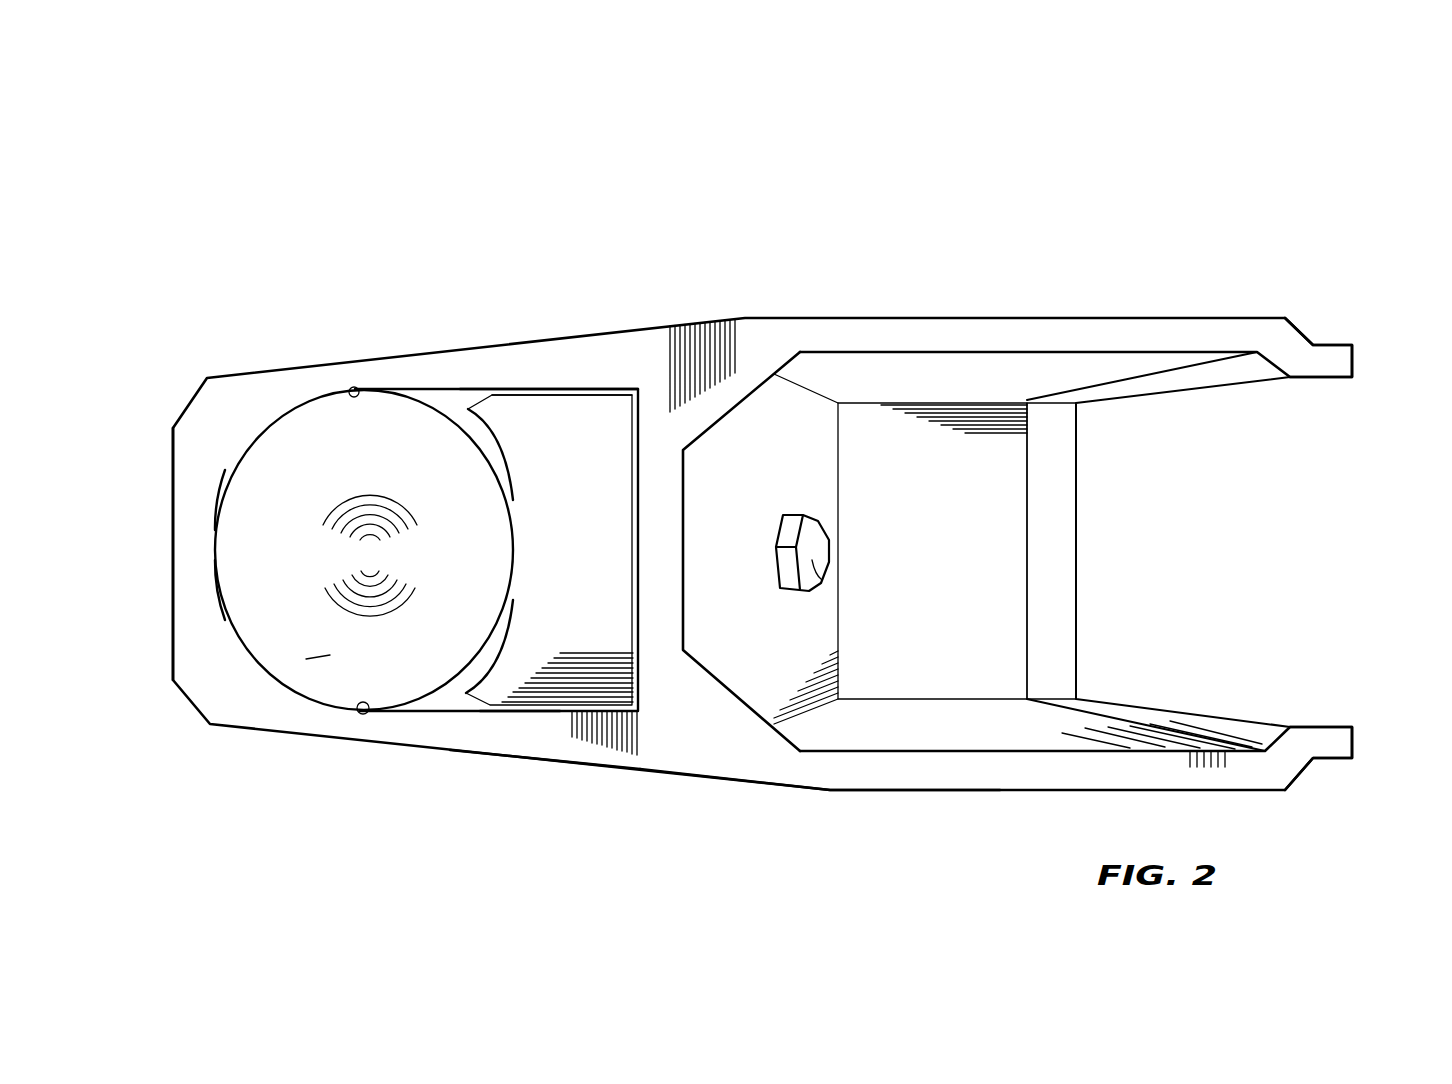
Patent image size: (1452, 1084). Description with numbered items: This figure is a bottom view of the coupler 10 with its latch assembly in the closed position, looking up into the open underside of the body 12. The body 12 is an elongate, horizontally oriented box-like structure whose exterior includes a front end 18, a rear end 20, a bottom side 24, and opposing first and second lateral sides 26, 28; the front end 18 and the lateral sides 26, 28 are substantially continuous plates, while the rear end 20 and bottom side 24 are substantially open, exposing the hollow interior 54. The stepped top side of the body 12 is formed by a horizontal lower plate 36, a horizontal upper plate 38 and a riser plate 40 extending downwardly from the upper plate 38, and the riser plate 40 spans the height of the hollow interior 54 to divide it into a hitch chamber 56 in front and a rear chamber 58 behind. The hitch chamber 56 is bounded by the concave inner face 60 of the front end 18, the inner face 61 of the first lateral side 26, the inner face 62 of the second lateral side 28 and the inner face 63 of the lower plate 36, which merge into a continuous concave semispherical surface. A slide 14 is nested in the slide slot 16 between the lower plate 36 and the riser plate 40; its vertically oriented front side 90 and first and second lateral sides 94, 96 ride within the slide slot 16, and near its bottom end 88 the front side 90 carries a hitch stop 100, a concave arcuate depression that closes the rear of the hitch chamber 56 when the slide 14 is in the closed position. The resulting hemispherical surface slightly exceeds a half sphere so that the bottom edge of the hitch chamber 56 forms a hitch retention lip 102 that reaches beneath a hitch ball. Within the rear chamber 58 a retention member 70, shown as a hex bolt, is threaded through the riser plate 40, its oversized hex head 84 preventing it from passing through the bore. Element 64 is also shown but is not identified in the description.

The coupler 10 is at (577, 208).
The body 12 is at (928, 314).
The slide 14 is at (597, 422).
The slide slot 16 is at (515, 391).
The front end 18 is at (172, 468).
The rear end 20 is at (1352, 729).
The bottom side 24 is at (717, 749).
The first lateral side 26 is at (726, 319).
The second lateral side 28 is at (553, 763).
The lower plate 36 is at (403, 420).
The upper plate 38 is at (988, 463).
The riser plate 40 is at (776, 428).
The hollow interior 54 is at (1000, 487).
The hitch chamber 56 is at (318, 658).
The rear chamber 58 is at (937, 559).
The inner face of the front plate 60 is at (216, 528).
The inner face of the first lateral side 61 is at (350, 388).
The inner face of the second lateral side 62 is at (376, 713).
The inner face of the lower plate 63 is at (369, 545).
The upper rail end 64 is at (1331, 344).
The retention member 70 is at (804, 513).
The hex head 84 is at (816, 572).
The bottom end 88 is at (598, 622).
The front side 90 is at (465, 412).
The first lateral side of the slide 94 is at (545, 390).
The second lateral side of the slide 96 is at (523, 709).
The hitch stop 100 is at (430, 693).
The hitch retention lip 102 is at (214, 586).